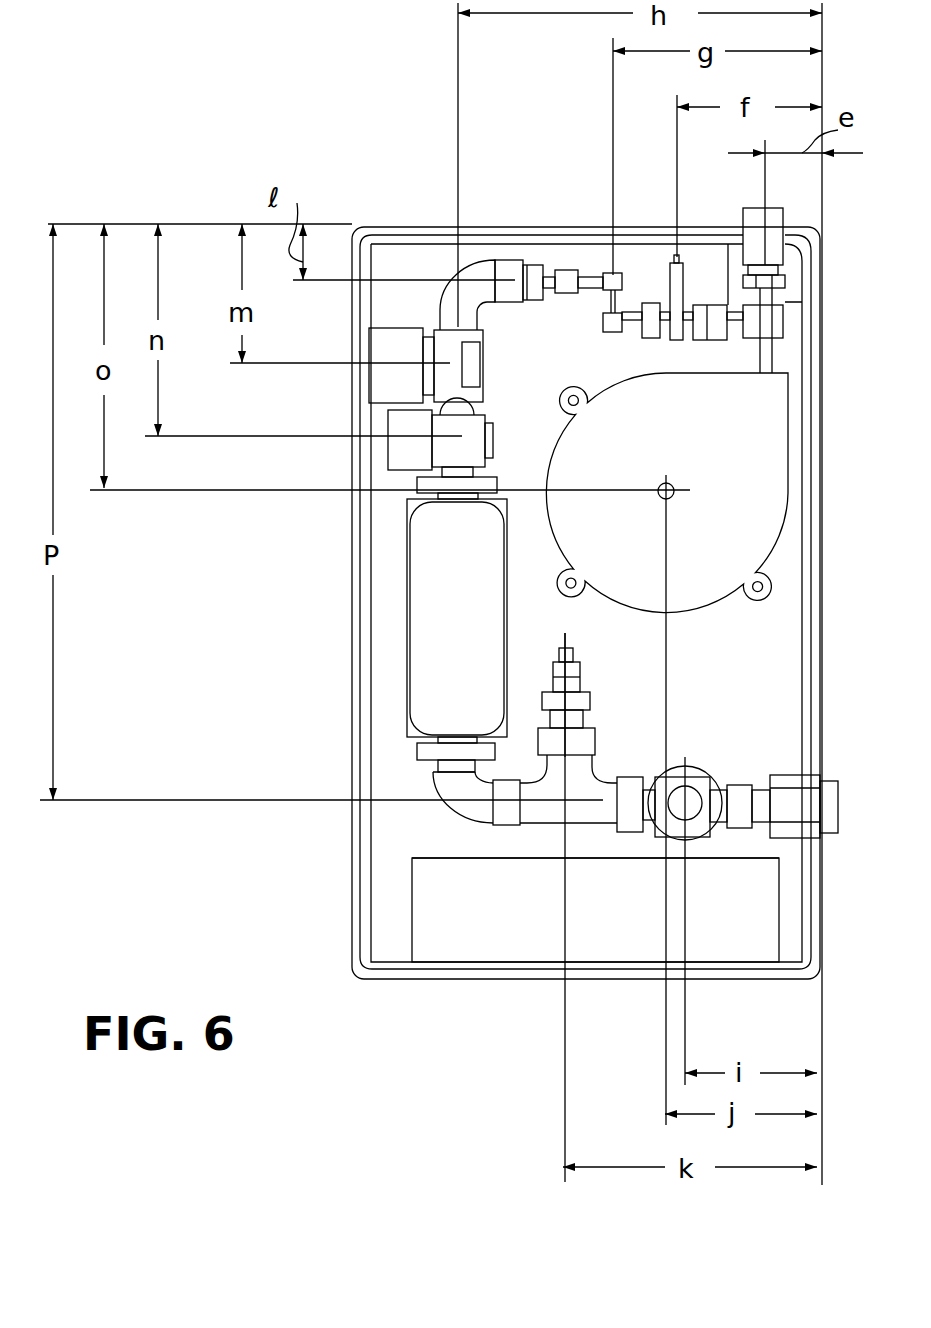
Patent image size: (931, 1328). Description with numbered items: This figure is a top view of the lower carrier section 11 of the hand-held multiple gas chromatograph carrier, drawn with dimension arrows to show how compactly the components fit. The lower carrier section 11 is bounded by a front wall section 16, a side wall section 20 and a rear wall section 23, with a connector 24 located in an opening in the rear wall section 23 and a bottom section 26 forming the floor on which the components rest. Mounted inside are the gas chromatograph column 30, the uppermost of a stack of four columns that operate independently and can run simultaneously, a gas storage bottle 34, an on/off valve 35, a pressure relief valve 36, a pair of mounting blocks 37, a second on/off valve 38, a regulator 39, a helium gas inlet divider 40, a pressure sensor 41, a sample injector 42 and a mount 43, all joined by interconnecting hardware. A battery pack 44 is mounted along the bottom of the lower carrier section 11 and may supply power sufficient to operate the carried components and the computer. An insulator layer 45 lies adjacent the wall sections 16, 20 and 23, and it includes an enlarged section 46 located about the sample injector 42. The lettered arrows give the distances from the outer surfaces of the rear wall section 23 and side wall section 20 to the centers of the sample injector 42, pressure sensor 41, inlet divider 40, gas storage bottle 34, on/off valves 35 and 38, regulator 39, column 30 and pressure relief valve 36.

The lower carrier section 11 is at (840, 608).
The front wall section 16 is at (352, 628).
The side wall section 20 is at (570, 237).
The rear wall section 23 is at (822, 658).
The connector 24 is at (836, 790).
The bottom section 26 is at (760, 668).
The gas chromatograph column 30 is at (730, 466).
The gas storage bottle 34 is at (470, 601).
The on/off valve 35 is at (700, 775).
The pressure relief valve 36 is at (575, 655).
The mounting block 37 is at (497, 486).
The on/off valve 38 is at (410, 428).
The regulator 39 is at (385, 347).
The gas (He) inlet divider 40 is at (603, 290).
The pressure sensor 41 is at (672, 268).
The sample injector 42 is at (780, 225).
The mount 43 is at (778, 325).
The battery pack 44 is at (512, 908).
The insulator layer 45 is at (806, 712).
The enlarged section 46 is at (795, 275).